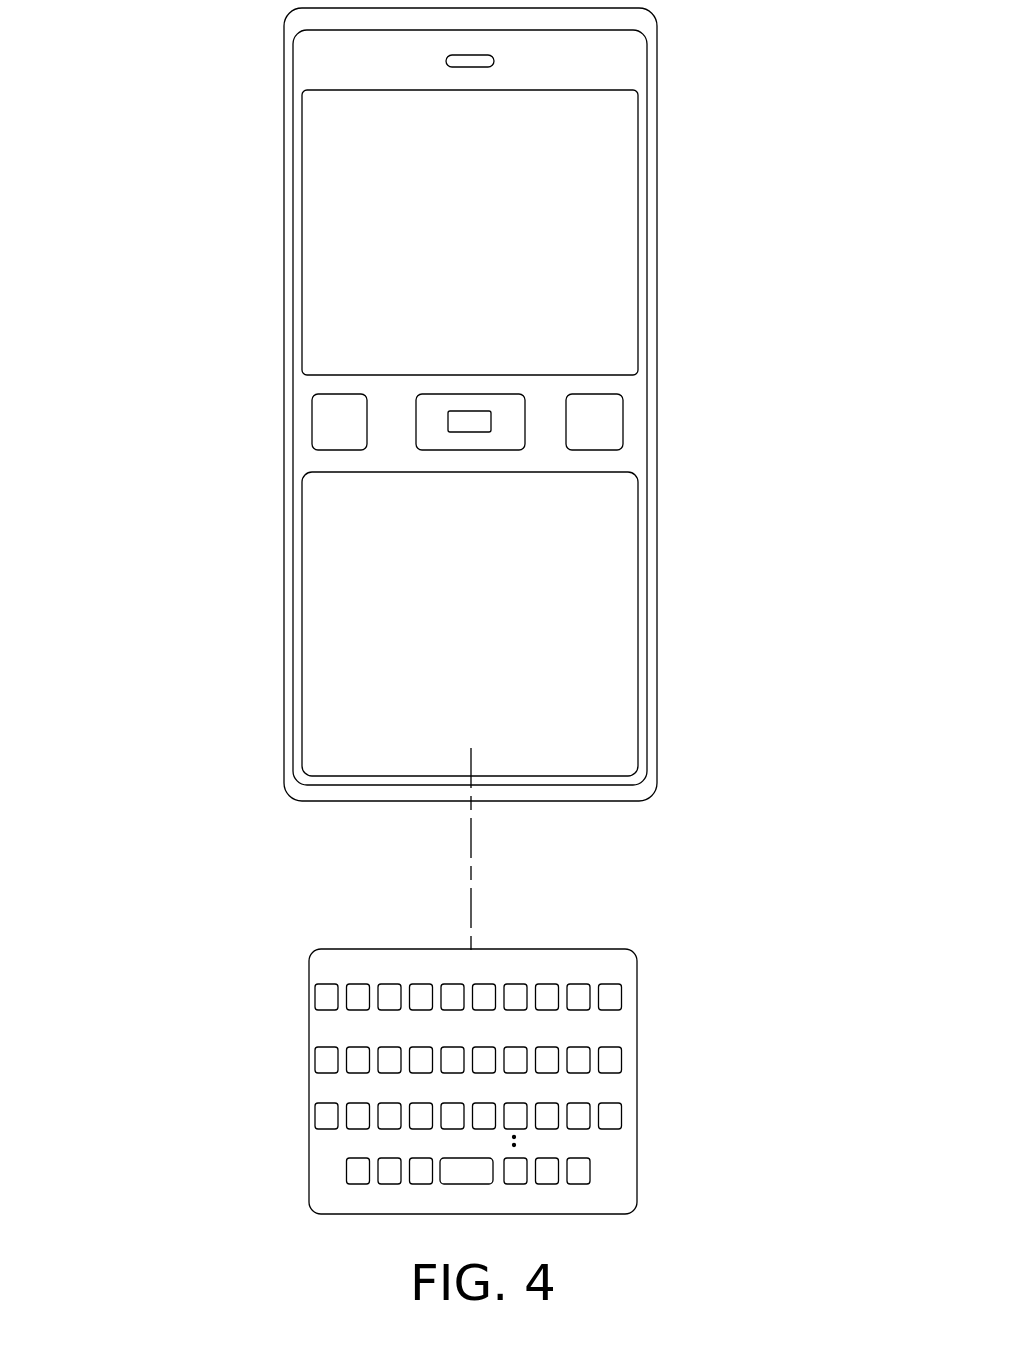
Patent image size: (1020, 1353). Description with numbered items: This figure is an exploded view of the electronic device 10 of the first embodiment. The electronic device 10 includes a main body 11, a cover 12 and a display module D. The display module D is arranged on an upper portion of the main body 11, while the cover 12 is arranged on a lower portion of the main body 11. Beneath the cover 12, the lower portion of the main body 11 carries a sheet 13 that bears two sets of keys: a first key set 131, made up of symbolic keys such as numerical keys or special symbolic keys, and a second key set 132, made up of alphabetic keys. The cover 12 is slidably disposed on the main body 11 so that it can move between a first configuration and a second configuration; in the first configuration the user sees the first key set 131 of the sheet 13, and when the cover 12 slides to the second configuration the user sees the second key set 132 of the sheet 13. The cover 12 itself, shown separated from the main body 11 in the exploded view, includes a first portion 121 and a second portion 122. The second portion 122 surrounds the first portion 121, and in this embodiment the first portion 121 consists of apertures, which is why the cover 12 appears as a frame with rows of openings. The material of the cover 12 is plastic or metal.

The electronic device 10 is at (92, 30).
The main body 11 is at (632, 68).
The display module D is at (605, 182).
The sheet 13 is at (473, 624).
The first key set 131 is at (348, 517).
The second key set 132 is at (617, 550).
The cover 12 is at (557, 1081).
The first portion 121 is at (621, 995).
The second portion 122 is at (620, 1027).